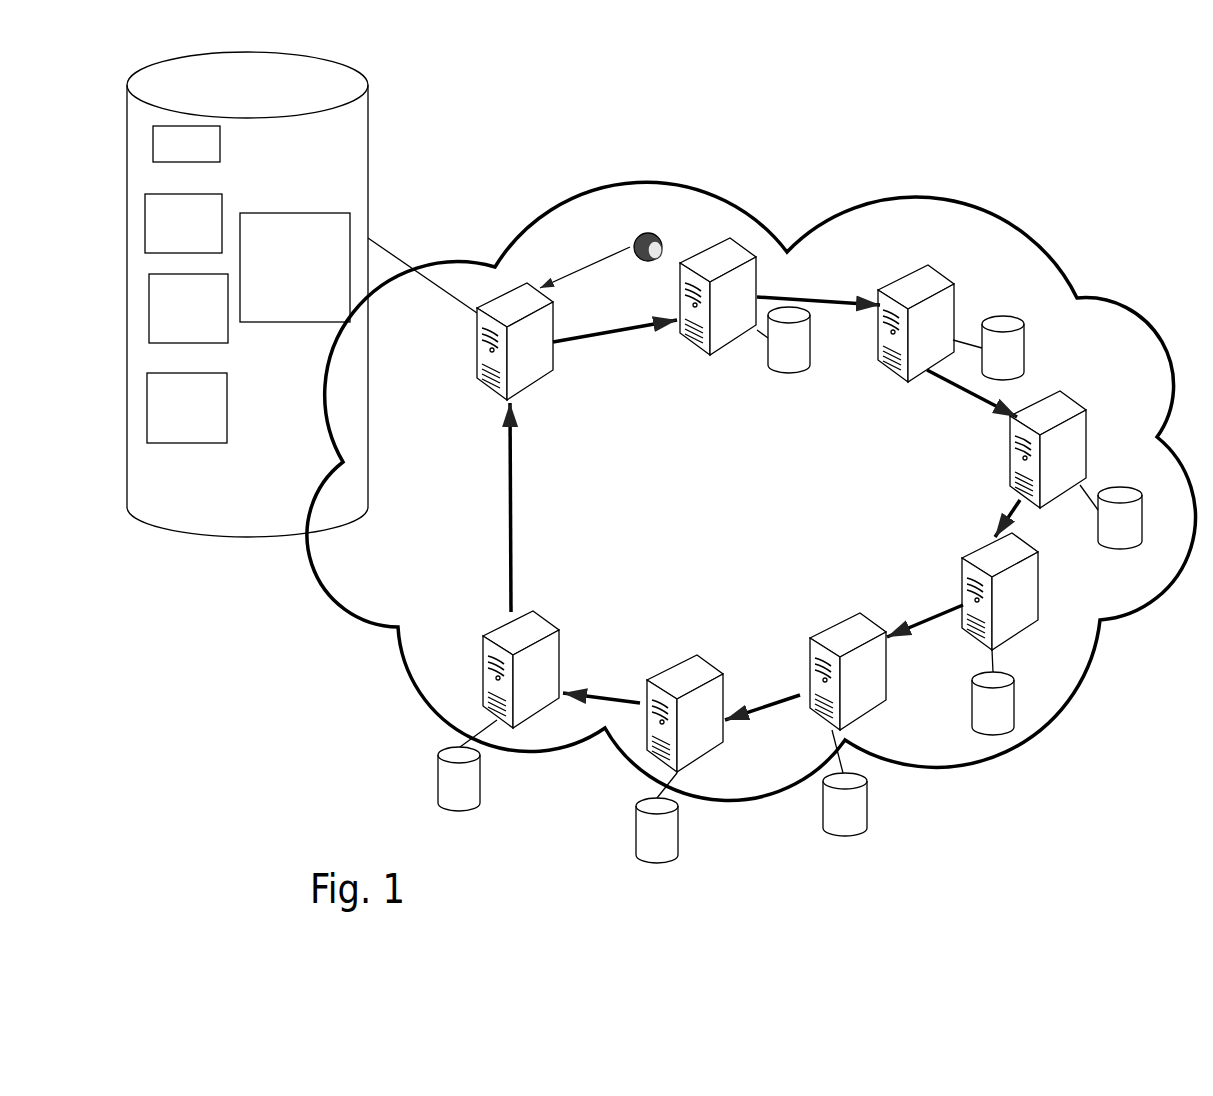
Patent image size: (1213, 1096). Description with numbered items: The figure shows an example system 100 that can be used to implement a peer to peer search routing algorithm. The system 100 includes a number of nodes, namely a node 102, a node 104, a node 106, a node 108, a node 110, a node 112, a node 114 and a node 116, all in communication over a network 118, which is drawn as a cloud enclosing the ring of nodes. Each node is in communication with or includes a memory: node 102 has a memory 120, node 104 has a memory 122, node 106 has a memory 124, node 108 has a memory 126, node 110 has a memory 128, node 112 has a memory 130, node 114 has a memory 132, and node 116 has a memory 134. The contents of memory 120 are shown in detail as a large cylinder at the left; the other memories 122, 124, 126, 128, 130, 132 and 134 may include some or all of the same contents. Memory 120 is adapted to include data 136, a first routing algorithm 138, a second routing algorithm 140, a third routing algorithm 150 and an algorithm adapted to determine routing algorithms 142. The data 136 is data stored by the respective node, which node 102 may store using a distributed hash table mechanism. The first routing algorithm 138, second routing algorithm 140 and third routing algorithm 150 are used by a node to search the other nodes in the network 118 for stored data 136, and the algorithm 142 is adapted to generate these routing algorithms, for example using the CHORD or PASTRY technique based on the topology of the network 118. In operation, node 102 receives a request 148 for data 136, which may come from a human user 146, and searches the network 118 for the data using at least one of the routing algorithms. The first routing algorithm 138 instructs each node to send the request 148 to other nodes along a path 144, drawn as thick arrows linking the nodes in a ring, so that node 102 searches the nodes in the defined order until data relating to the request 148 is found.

The system 100 is at (982, 166).
The node 102 is at (555, 328).
The node 104 is at (757, 277).
The node 106 is at (953, 317).
The node 108 is at (1090, 443).
The node 110 is at (1042, 580).
The node 112 is at (890, 663).
The node 114 is at (725, 698).
The node 116 is at (560, 660).
The network 118 is at (681, 503).
The memory 120 is at (370, 162).
The memory 122 is at (810, 337).
The memory 124 is at (1025, 348).
The memory 126 is at (1143, 518).
The memory 128 is at (1015, 702).
The memory 130 is at (823, 803).
The memory 132 is at (623, 837).
The memory 134 is at (437, 778).
The data 136 is at (220, 150).
The first routing algorithm 138 is at (220, 205).
The second routing algorithm 140 is at (223, 343).
The algorithm adapted to determine routing algorithms 142 is at (290, 213).
The path 144 is at (617, 333).
The human user 146 is at (663, 233).
The request 148 is at (574, 260).
The third routing algorithm 150 is at (198, 442).